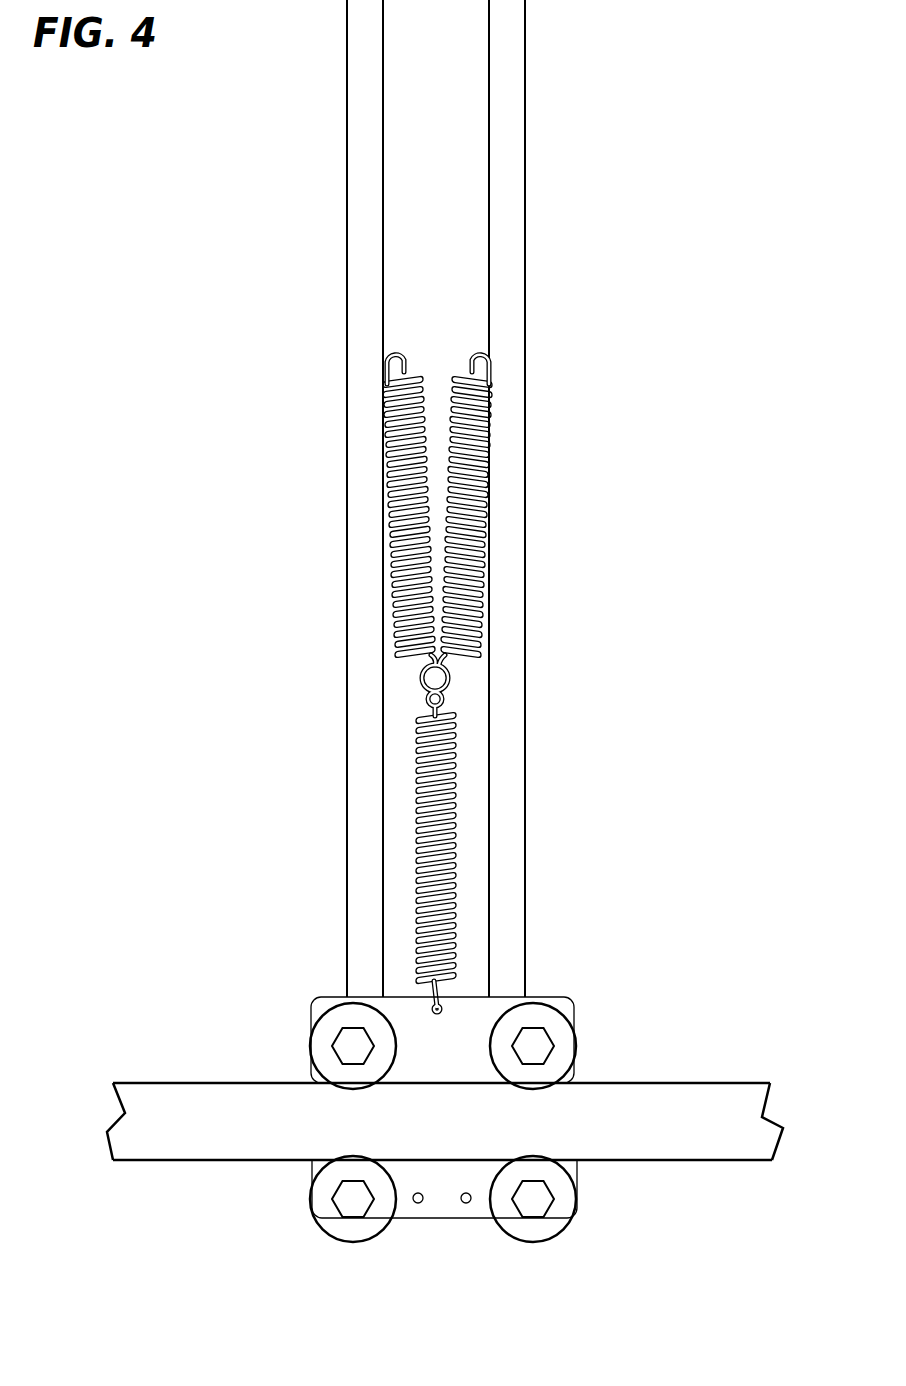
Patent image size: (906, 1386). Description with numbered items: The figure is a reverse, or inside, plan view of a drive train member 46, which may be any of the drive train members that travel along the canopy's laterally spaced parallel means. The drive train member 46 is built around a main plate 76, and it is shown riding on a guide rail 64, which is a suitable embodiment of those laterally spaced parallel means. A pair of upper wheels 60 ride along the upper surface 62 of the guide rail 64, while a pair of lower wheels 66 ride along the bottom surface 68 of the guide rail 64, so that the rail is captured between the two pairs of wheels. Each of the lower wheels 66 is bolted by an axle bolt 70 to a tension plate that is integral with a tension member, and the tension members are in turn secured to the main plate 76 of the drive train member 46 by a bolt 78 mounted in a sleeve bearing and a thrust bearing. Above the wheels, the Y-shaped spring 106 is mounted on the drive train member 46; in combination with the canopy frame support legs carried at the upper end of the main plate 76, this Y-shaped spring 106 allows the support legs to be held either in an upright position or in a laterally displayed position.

The drive train member 46 is at (640, 647).
The Y-shaped spring 106 is at (433, 380).
The main plate 76 is at (443, 1035).
The upper wheels 60 is at (318, 1033).
The upper surface 62 is at (728, 1083).
The guide rail 64 is at (155, 1140).
The bottom surface 68 is at (738, 1160).
The lower wheels 66 is at (322, 1218).
The axle bolt 70 is at (350, 1193).
The bolt 78 is at (418, 1205).